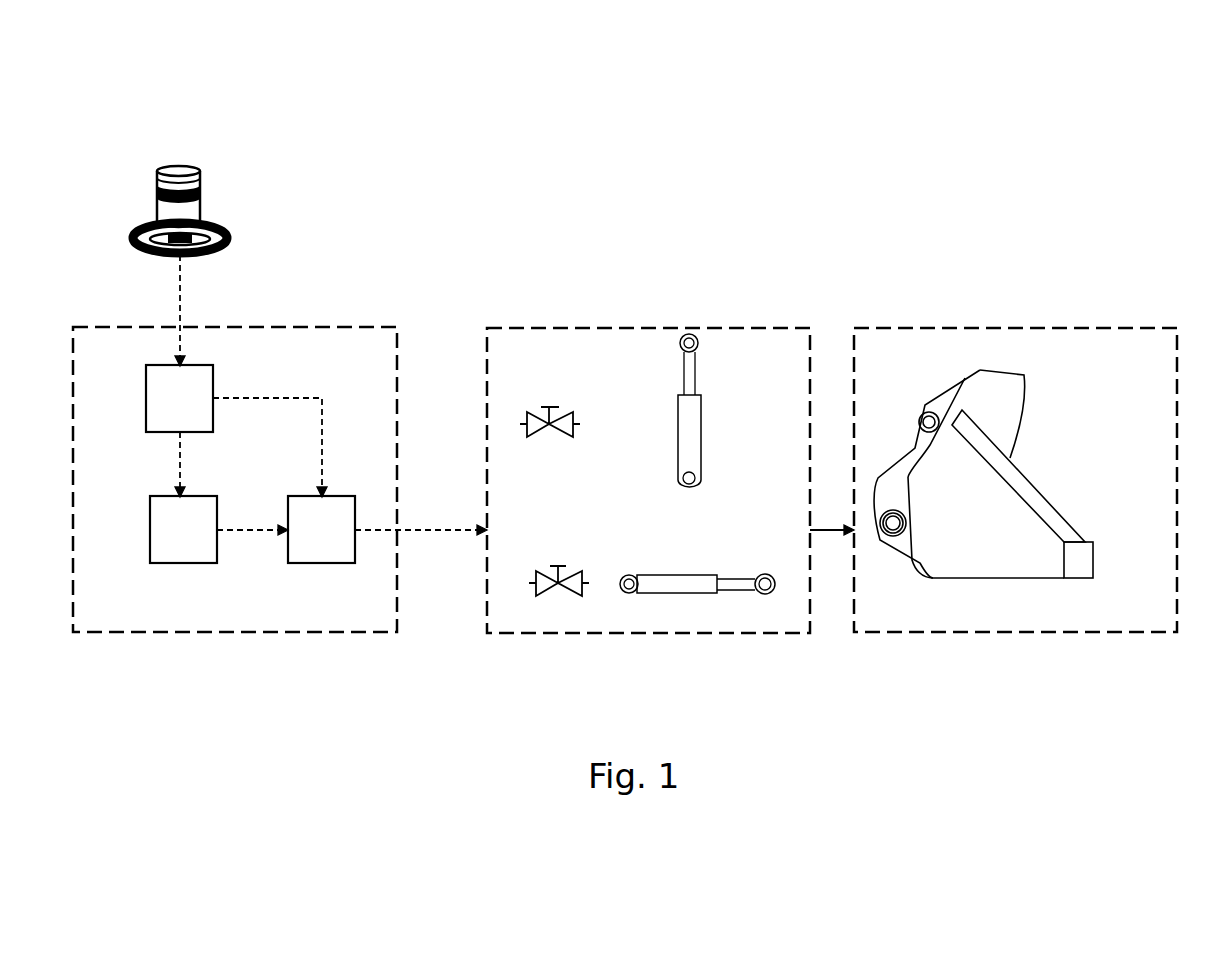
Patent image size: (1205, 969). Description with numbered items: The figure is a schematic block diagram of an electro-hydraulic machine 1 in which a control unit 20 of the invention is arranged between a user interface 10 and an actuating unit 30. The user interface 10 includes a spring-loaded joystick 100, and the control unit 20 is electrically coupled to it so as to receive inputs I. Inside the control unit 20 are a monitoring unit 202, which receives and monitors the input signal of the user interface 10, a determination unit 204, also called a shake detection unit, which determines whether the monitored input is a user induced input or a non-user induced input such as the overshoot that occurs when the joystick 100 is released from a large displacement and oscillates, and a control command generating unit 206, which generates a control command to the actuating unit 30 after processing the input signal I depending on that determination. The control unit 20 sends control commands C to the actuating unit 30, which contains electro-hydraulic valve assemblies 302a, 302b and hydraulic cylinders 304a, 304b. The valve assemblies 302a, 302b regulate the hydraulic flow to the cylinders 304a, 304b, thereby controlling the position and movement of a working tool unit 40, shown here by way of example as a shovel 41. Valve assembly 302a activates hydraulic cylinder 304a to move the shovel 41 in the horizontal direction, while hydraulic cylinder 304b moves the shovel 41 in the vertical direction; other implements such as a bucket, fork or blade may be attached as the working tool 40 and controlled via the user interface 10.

The electro-hydraulic machine 1 is at (500, 84).
The user interface 10 is at (120, 182).
The spring-loaded joystick 100 is at (227, 230).
The inputs I is at (182, 283).
The control unit 20 is at (106, 312).
The monitoring unit 202 is at (203, 412).
The determination unit 204 is at (207, 544).
The control command generating unit 206 is at (345, 544).
The control commands C is at (423, 530).
The actuating unit 30 is at (548, 327).
The electro-hydraulic valve assembly 302a is at (545, 562).
The electro-hydraulic valve assembly 302b is at (557, 398).
The hydraulic cylinder 304a is at (653, 570).
The hydraulic cylinder 304b is at (702, 423).
The working tool unit 40 is at (897, 327).
The shovel 41 is at (1033, 485).